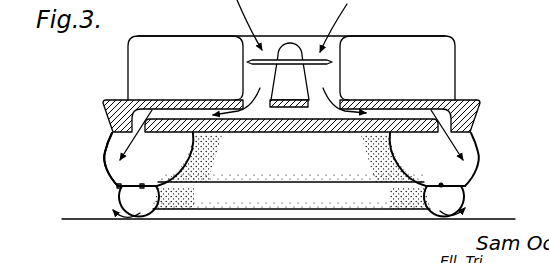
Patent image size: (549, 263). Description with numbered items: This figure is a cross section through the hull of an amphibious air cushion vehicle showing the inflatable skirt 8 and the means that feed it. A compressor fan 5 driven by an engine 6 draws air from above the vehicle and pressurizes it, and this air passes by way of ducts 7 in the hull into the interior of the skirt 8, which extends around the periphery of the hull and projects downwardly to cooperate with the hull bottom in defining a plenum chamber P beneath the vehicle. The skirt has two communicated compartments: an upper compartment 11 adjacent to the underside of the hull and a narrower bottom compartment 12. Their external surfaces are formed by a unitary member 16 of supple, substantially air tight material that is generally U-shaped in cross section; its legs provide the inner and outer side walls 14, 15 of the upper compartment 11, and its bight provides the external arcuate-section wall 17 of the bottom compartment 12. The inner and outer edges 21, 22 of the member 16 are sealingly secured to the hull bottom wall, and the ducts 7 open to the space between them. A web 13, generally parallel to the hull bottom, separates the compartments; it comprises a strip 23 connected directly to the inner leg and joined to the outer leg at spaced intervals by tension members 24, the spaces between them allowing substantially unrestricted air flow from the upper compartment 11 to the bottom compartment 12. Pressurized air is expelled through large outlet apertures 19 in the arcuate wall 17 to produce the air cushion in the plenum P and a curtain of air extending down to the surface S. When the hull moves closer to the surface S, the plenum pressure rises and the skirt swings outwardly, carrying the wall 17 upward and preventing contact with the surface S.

The compressor fan 5 is at (307, 54).
The engine 6 is at (300, 80).
The ducts 7 is at (174, 110).
The inflatable skirt 8 is at (105, 157).
The upper compartment 11 is at (166, 155).
The bottom compartment 12 is at (134, 205).
The web 13 is at (157, 186).
The inner side wall 14 is at (200, 162).
The outer side wall 15 is at (105, 166).
The unitary member 16 is at (97, 142).
The external arcuate-section wall 17 is at (120, 198).
The large outlet apertures 19 is at (142, 215).
The inner edge 21 is at (197, 130).
The outer edge 22 is at (106, 126).
The strip 23 is at (158, 187).
The tension members 24 is at (118, 186).
The plenum chamber P is at (272, 163).
The surface S is at (507, 217).